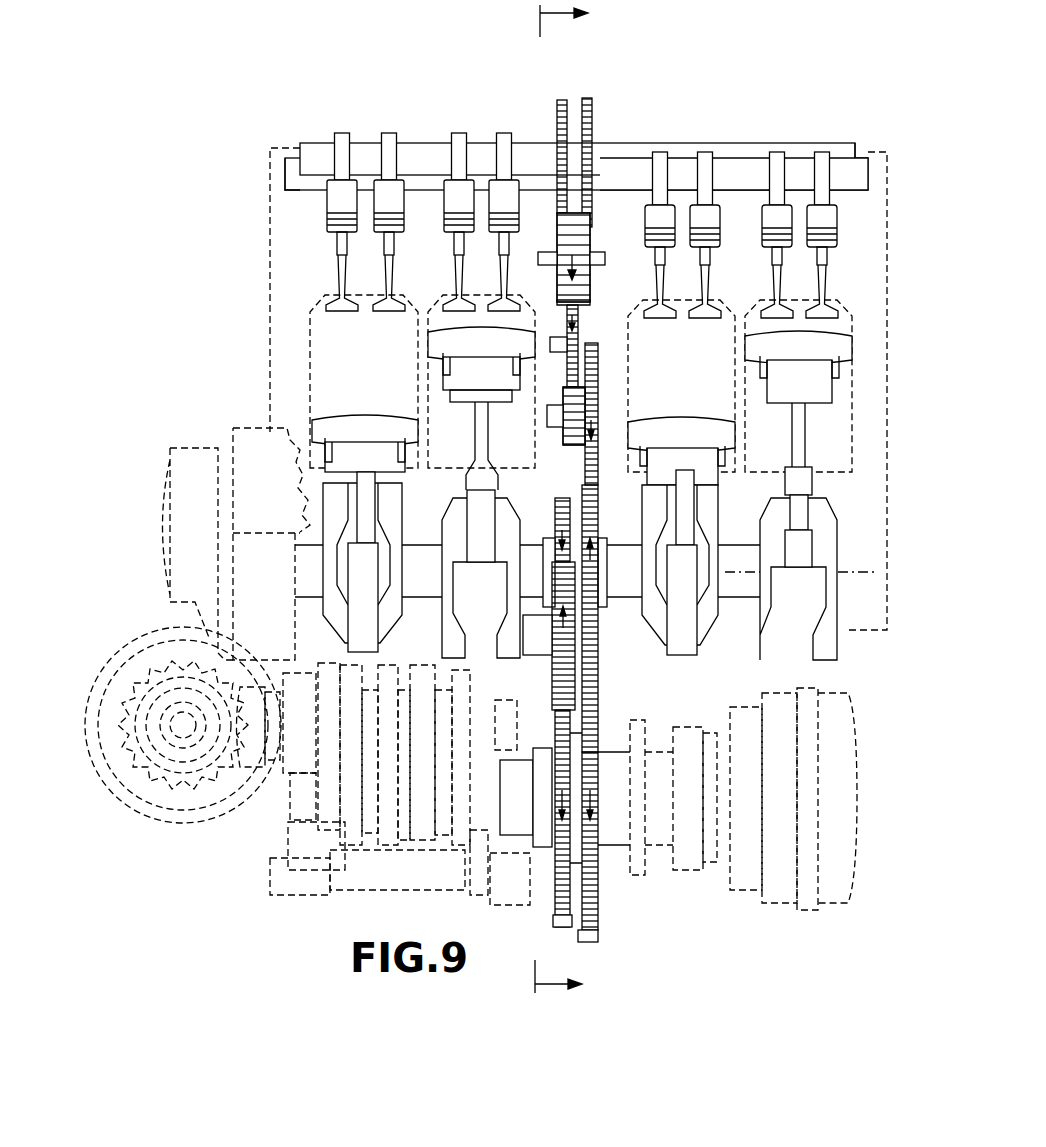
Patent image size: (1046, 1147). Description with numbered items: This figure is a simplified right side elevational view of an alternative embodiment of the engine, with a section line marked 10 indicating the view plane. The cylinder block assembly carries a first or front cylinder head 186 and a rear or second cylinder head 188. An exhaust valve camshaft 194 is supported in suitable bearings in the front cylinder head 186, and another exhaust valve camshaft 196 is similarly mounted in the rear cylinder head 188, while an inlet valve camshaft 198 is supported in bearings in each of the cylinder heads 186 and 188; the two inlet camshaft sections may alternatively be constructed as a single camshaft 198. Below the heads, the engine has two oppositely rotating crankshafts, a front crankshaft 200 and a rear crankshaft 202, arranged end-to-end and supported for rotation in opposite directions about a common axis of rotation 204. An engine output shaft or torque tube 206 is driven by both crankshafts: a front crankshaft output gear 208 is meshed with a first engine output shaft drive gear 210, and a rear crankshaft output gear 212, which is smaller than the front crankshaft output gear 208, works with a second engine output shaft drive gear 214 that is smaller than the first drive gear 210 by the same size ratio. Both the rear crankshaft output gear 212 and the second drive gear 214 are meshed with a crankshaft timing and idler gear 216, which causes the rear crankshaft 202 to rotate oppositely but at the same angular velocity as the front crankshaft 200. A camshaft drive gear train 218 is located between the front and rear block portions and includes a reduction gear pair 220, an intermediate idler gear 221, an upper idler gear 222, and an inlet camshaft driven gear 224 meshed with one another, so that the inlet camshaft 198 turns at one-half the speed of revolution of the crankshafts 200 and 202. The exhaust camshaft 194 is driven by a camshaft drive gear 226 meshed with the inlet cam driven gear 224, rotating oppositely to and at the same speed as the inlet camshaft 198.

The section line 10- 10 is at (542, 500).
The front cylinder head 186 is at (885, 152).
The cylinder head 188 is at (270, 275).
The exhaust valve camshaft 194 is at (800, 165).
The exhaust valve camshaft 196 is at (297, 188).
The inlet valve camshaft 198 is at (363, 148).
The front crankshaft 200 is at (738, 588).
The rear crankshaft 202 is at (310, 572).
The common axis of rotation 204 is at (848, 570).
The engine output shaft 206 is at (612, 845).
The front crankshaft output gear 208 is at (598, 683).
The first engine output shaft drive gear 210 is at (598, 930).
The rear crankshaft output gear 212 is at (553, 517).
The second engine output shaft drive gear 214 is at (555, 918).
The crankshaft timing and idler gear 216 is at (552, 680).
The camshaft drive gear train 218 is at (610, 414).
The reduction gear pair 220 is at (598, 368).
The intermediate idler gear 221 is at (580, 318).
The upper idler gear 222 is at (597, 283).
The inlet camshaft driven gear 224 is at (585, 98).
The camshaft drive gear 226 is at (593, 122).